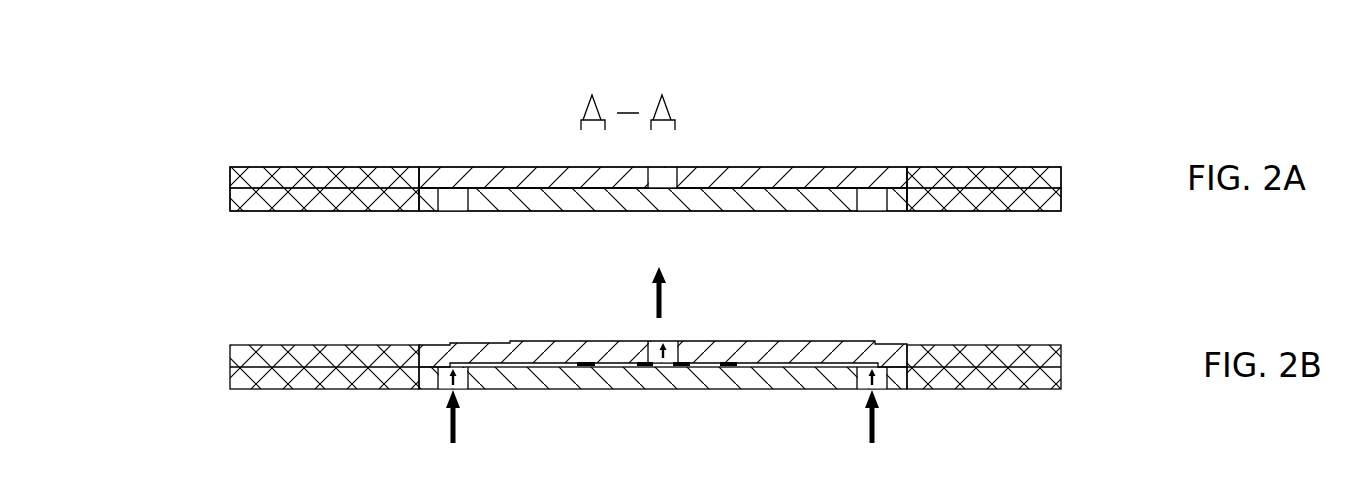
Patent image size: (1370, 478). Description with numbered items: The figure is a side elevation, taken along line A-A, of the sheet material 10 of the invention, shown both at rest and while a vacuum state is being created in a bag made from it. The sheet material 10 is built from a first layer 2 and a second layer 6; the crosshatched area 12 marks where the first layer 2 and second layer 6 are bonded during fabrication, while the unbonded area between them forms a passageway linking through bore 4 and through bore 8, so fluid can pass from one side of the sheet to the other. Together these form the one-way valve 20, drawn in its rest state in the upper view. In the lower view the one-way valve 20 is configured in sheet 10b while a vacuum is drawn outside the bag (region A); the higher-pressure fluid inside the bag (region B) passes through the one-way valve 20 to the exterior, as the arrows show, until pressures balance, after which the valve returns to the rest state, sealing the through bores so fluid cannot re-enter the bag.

In FIG. 2A, the first layer 2 is at (230, 210).
In FIG. 2A, the through bore 4 is at (453, 203).
In FIG. 2A, the second layer 6 is at (230, 165).
In FIG. 2A, the through bore 8 is at (660, 181).
In FIG. 2A, the sheet material 10 is at (1072, 120).
In FIG. 2B, the sheet 10b is at (1063, 321).
In FIG. 2A, the crosshatched area 12 is at (419, 167).
In FIG. 2A, the one-way valve 20 is at (420, 167).